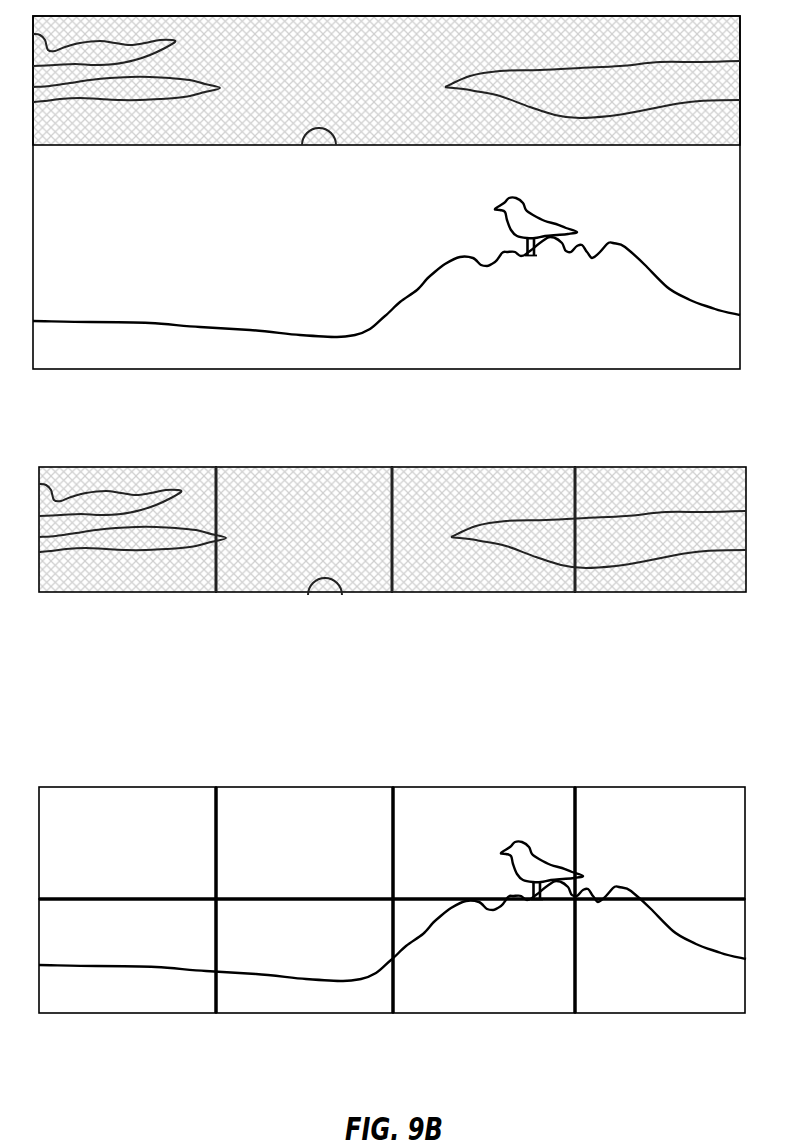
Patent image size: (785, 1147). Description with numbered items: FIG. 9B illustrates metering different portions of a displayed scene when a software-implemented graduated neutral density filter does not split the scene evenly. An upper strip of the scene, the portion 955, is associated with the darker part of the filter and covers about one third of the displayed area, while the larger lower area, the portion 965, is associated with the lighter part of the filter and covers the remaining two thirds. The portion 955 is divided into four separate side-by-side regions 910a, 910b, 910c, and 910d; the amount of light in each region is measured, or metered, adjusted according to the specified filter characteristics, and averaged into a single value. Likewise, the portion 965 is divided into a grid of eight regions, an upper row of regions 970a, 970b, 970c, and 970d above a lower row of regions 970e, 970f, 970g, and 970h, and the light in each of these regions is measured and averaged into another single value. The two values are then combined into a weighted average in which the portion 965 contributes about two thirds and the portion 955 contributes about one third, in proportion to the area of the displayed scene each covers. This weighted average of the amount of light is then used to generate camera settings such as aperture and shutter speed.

The portion 955 is at (118, 440).
The region 910a is at (160, 593).
The region 910b is at (333, 593).
The region 910c is at (523, 593).
The region 910d is at (712, 593).
The portion 965 is at (121, 713).
The region 970a is at (158, 787).
The region 970b is at (331, 787).
The region 970c is at (521, 787).
The region 970d is at (709, 787).
The region 970e is at (157, 1014).
The region 970f is at (330, 1014).
The region 970g is at (520, 1014).
The grid cell h 970h is at (708, 1014).